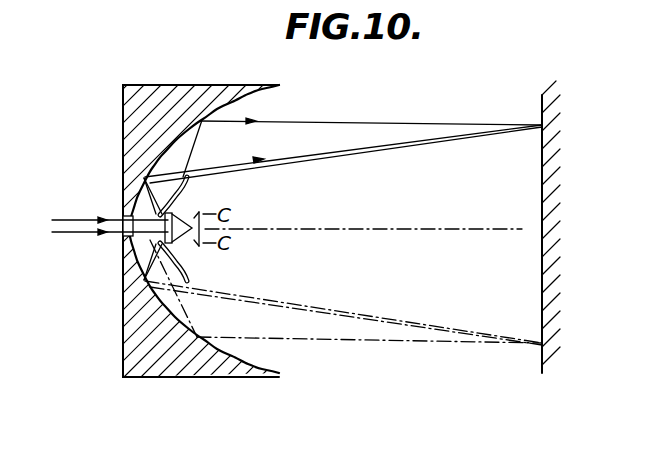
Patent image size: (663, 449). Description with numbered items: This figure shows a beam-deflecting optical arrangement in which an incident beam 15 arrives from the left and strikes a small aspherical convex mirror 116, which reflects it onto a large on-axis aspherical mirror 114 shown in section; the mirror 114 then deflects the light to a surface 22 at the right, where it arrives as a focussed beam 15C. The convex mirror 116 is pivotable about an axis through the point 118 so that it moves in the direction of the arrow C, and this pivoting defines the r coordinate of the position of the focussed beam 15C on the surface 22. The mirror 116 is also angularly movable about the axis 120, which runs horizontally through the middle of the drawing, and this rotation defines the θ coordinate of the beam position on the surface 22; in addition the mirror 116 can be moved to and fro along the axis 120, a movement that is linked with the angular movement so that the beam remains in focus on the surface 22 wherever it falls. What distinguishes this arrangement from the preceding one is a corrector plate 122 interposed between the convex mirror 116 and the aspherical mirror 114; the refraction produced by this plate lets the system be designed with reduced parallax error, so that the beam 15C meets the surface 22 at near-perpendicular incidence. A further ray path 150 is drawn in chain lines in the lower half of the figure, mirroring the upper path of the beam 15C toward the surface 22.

The on-axis aspherical mirror 114 is at (174, 378).
The surface 22 is at (545, 282).
The incident beam 15 is at (84, 233).
The corrector plate 122 is at (165, 271).
The small aspherical convex mirror 116 is at (192, 206).
The pivot point 118 is at (193, 252).
The focussed beam 15C is at (318, 131).
The axis 120 is at (370, 230).
The alternative light path 150 is at (348, 333).